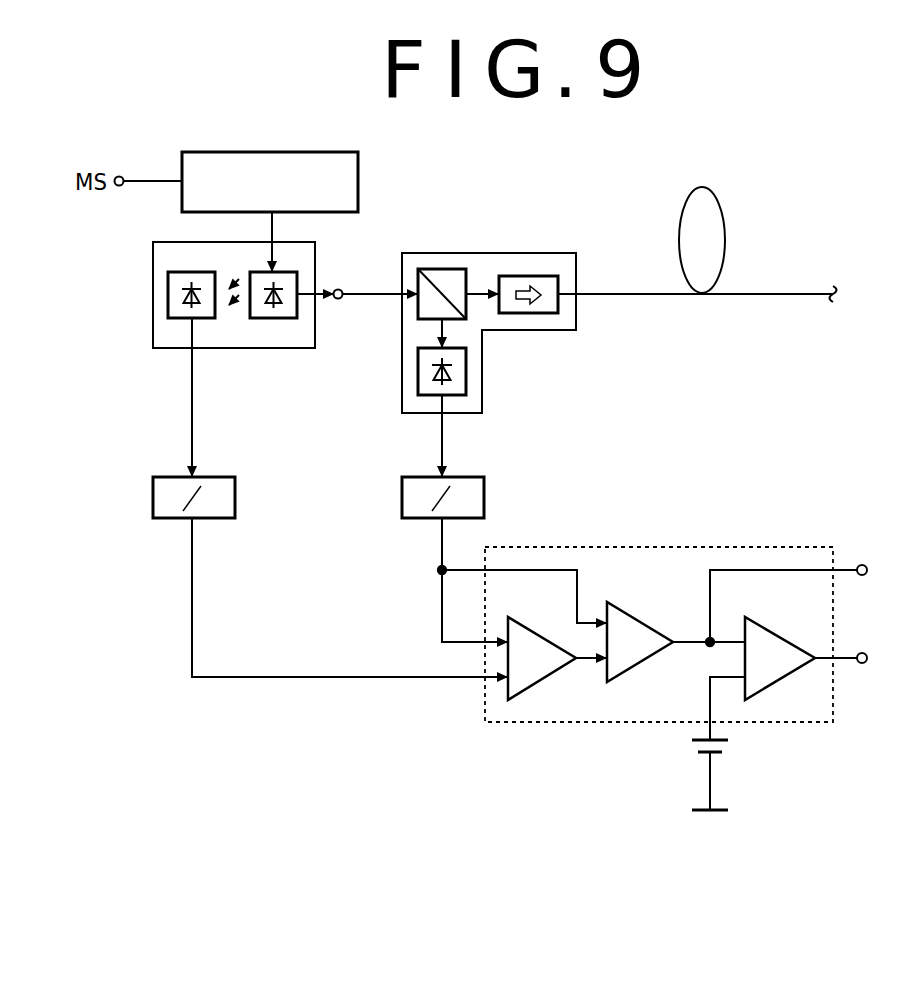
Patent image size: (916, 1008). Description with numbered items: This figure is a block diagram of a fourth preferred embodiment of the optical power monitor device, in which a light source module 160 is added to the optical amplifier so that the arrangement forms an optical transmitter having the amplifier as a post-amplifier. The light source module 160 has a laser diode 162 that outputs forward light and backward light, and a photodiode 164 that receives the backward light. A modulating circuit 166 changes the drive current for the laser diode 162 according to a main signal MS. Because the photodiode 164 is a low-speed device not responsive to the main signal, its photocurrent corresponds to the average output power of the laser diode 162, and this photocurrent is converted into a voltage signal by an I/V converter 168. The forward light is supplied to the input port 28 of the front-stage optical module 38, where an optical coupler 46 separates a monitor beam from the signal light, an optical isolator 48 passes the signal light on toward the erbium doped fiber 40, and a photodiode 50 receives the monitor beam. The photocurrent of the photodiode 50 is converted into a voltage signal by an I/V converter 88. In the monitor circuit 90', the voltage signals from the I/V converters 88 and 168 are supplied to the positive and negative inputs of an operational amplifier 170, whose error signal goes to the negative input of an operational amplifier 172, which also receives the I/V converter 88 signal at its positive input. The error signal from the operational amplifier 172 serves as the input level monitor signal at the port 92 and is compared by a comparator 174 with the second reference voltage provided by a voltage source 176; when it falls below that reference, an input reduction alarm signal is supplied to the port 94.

The input port 28 is at (341, 300).
The front-stage optical module 38 is at (490, 253).
The erbium doped fiber (EDF) 40 is at (703, 187).
The optical coupler 46 is at (445, 268).
The optical isolator 48 is at (529, 276).
The photodiode 50 is at (466, 370).
The I/V converter 88 is at (484, 498).
The monitor circuit 90' is at (659, 624).
The port 92 is at (862, 565).
The port 94 is at (862, 664).
The light source module 160 is at (236, 350).
The laser diode (LD) 162 is at (297, 272).
The photodiode 164 is at (168, 297).
The modulating circuit 166 is at (268, 151).
The I/V converter 168 is at (235, 500).
The operational amplifier 170 is at (548, 682).
The operational amplifier 172 is at (640, 614).
The comparator 174 is at (786, 640).
The voltage source 176 is at (690, 752).